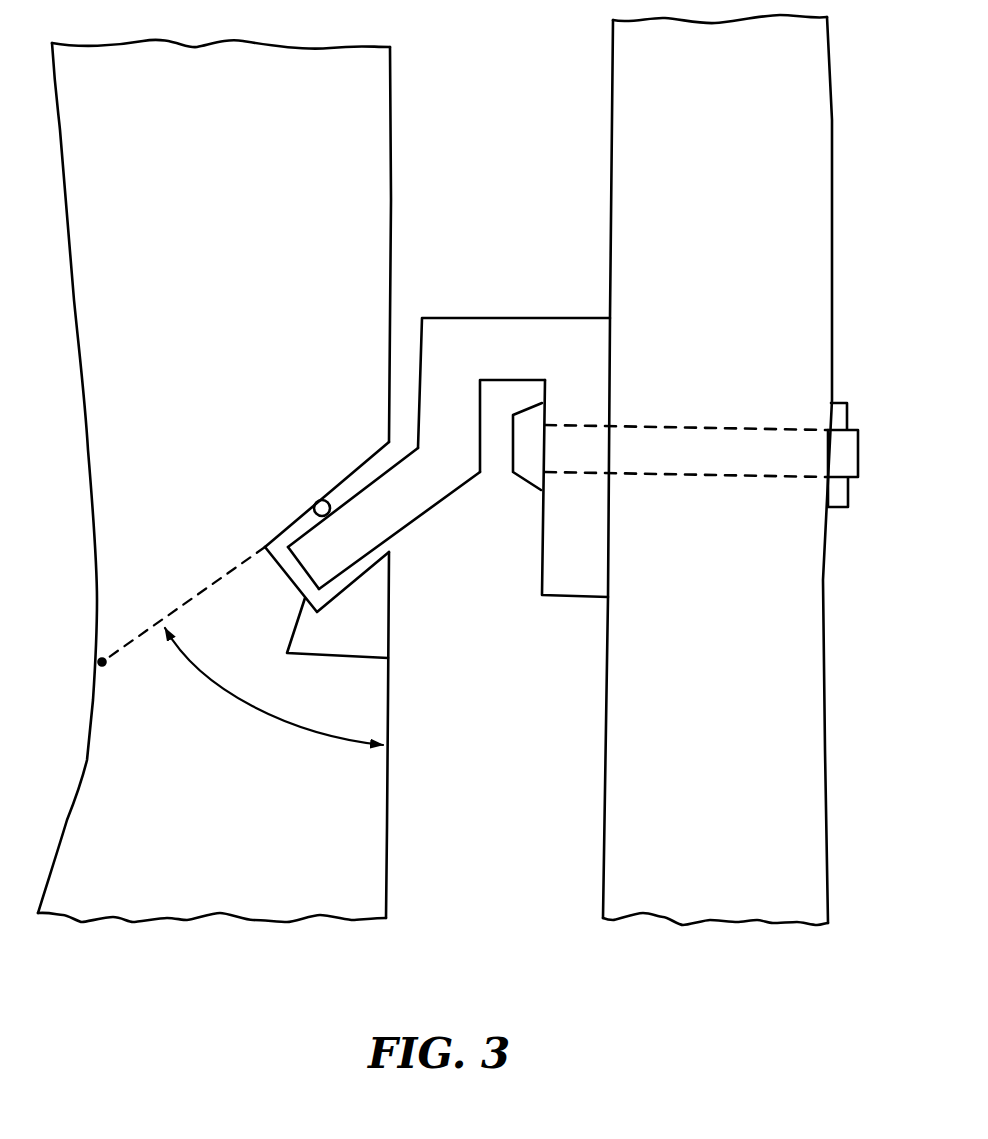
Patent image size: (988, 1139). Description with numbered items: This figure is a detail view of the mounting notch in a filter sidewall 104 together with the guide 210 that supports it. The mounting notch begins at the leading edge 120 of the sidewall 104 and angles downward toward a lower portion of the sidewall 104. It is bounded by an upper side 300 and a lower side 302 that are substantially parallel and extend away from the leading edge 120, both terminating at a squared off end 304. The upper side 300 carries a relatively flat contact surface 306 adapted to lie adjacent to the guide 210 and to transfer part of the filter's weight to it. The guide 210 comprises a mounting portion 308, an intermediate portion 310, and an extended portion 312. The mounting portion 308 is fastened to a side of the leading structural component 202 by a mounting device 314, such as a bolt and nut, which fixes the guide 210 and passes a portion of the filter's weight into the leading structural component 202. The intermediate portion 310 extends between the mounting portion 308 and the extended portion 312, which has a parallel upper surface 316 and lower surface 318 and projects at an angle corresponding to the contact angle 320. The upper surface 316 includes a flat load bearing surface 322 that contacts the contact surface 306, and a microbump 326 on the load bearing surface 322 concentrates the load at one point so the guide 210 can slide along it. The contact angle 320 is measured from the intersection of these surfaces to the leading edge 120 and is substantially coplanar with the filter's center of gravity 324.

The sidewall 104 is at (322, 898).
The leading edge 120 is at (388, 827).
The leading structural component 202 is at (743, 903).
The guide 210 is at (503, 270).
The upper side 300 is at (343, 478).
The lower side 302 is at (347, 590).
The squared off end 304 is at (388, 658).
The contact surface 306 is at (267, 522).
The mounting portion 308 is at (582, 583).
The intermediate portion 310 is at (518, 327).
The extended portion 312 is at (442, 480).
The mounting device 314 is at (528, 467).
The upper surface 316 is at (373, 480).
The lower surface 318 is at (420, 518).
The contact angle 320 is at (313, 727).
The load bearing surface 322 is at (363, 502).
The center of gravity 324 is at (102, 662).
The microbump 326 is at (313, 505).